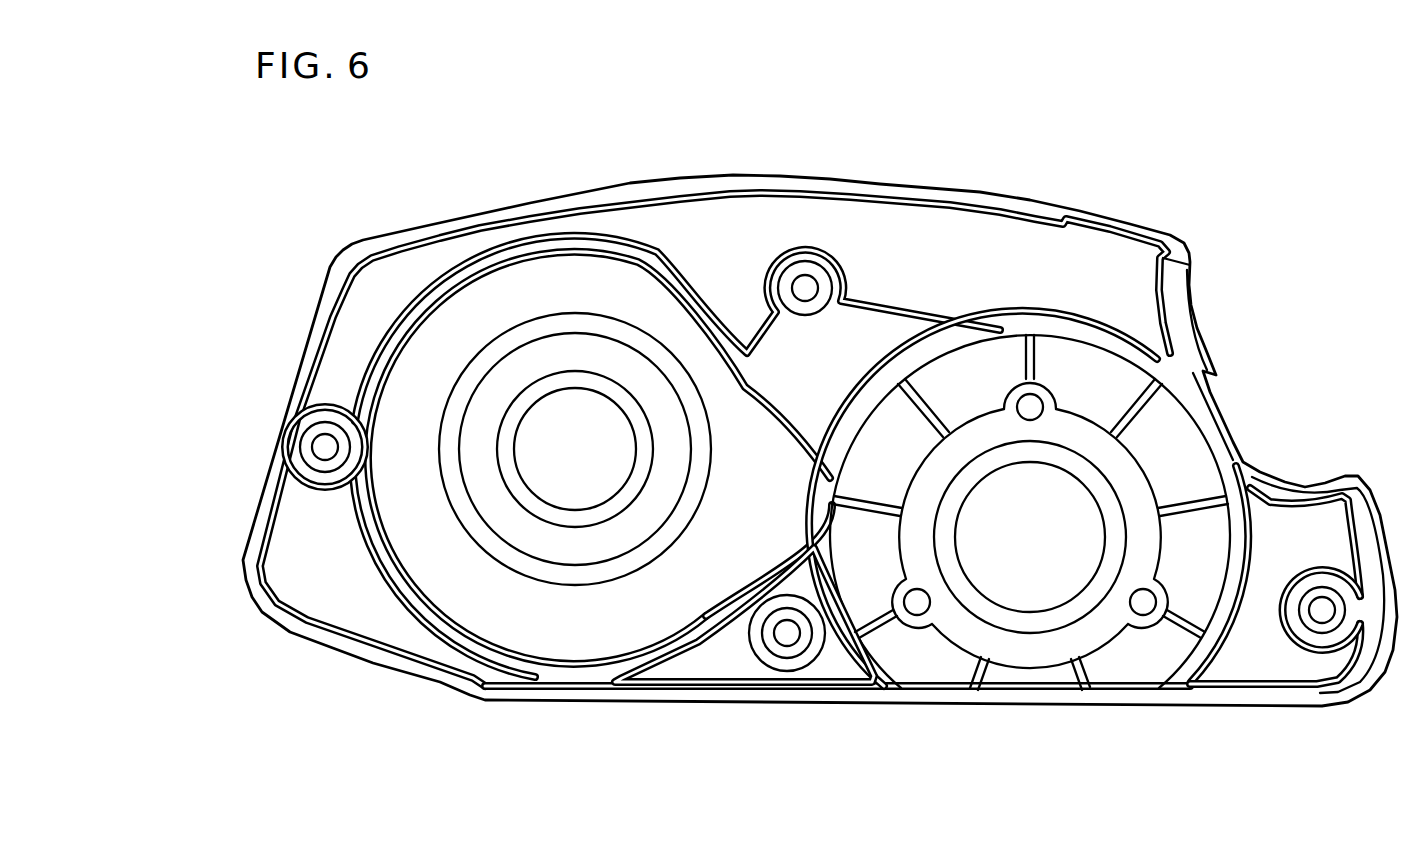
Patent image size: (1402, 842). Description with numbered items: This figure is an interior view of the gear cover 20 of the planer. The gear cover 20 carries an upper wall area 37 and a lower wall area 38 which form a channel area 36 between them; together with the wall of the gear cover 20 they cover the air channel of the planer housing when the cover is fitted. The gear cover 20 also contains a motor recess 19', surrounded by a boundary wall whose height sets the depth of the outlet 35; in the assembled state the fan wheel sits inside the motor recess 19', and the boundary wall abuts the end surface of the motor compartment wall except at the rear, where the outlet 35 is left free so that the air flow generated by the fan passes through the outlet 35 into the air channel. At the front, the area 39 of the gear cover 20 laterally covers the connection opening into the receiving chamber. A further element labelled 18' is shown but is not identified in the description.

The gear cover 20 is at (305, 345).
The outlet 35 is at (735, 450).
The channel area 36 is at (940, 300).
The upper wall area 37 is at (870, 282).
The lower wall area 38 is at (1057, 327).
The area of the gear cover 39 is at (1185, 280).
The motor recess 19' is at (599, 527).
The hub with spokes 18' is at (1030, 570).